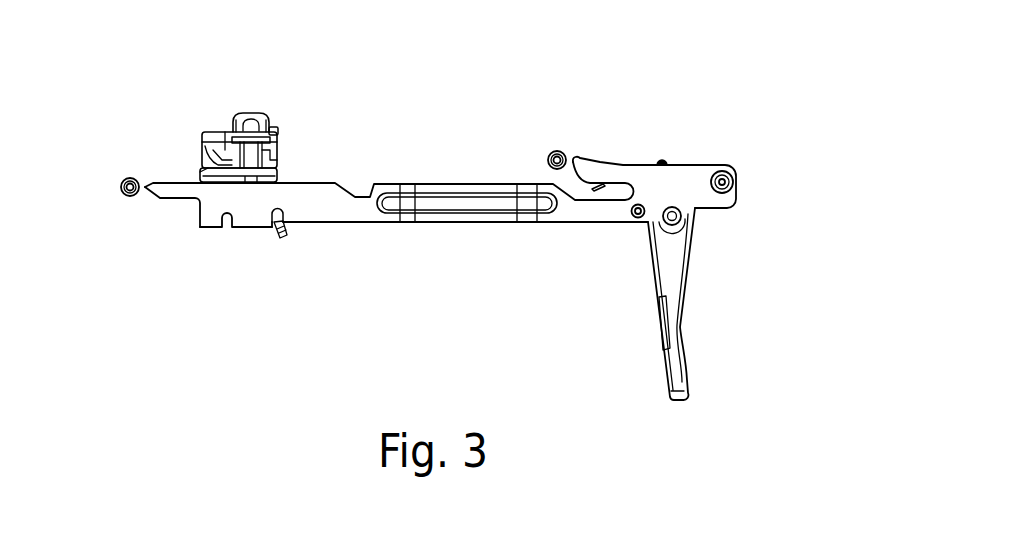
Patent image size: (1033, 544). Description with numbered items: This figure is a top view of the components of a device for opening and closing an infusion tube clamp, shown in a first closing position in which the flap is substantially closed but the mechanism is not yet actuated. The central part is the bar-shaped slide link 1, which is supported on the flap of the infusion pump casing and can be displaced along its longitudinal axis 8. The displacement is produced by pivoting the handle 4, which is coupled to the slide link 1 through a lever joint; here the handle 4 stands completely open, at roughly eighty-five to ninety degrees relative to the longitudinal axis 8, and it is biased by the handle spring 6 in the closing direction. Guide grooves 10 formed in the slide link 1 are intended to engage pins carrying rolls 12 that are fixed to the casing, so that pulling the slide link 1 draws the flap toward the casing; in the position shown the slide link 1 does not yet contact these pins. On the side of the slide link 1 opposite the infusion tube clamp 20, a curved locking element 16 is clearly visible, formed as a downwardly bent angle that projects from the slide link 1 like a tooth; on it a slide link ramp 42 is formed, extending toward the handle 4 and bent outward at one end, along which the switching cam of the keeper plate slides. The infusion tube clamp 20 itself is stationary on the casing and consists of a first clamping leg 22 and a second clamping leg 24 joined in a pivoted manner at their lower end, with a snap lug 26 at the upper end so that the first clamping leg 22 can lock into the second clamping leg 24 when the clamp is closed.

The slide link 1 is at (651, 172).
The handle 4 is at (664, 374).
The handle spring 6 is at (597, 186).
The longitudinal axis 8 is at (688, 206).
The guide grooves 10 is at (158, 182).
The rolls 12 is at (131, 178).
The locking element 16 is at (243, 227).
The infusion tube clamp 20 is at (253, 112).
The first clamping leg 22 is at (207, 138).
The second clamping leg 24 is at (273, 130).
The snap lug 26 is at (248, 112).
The slide link ramp 42 is at (284, 237).